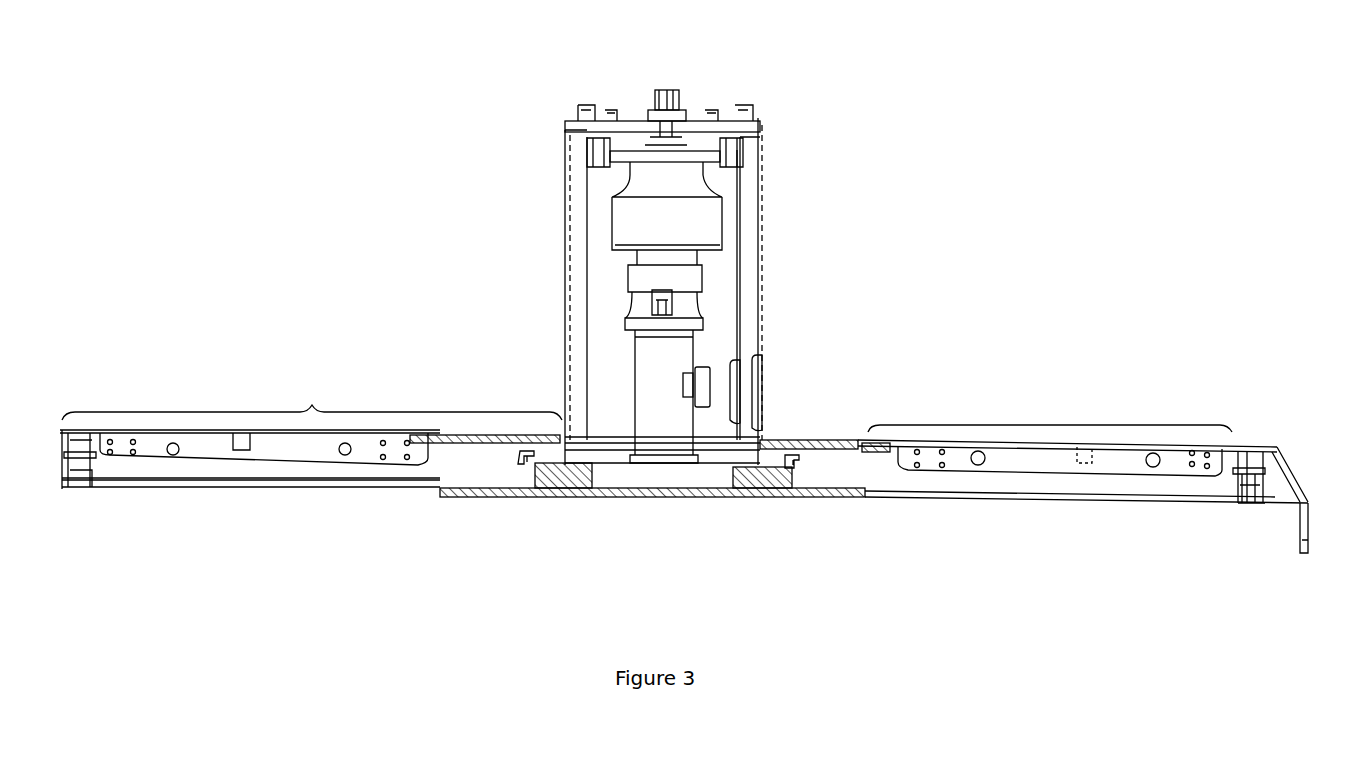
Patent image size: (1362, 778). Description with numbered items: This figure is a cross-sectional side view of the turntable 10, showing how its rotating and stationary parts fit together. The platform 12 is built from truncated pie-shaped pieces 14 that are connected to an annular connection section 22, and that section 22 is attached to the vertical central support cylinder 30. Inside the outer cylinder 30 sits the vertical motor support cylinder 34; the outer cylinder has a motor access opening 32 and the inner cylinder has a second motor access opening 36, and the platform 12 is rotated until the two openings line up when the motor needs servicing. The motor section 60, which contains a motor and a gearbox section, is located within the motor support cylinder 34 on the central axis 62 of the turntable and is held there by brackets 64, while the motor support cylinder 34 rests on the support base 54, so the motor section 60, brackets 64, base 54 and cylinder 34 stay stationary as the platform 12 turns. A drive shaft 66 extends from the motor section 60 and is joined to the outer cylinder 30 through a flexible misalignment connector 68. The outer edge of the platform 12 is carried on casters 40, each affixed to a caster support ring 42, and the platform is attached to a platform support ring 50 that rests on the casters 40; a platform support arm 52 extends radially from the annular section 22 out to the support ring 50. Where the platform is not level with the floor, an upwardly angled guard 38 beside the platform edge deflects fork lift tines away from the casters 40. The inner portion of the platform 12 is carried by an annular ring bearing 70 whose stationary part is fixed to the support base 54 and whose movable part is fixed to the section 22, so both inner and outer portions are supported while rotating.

The turntable 10 is at (326, 192).
The platform 12 is at (311, 430).
The truncated pie-shaped pieces 14 is at (1040, 440).
The annular connection section 22 is at (840, 440).
The vertical central support cylinder 30 is at (762, 292).
The motor access opening 32 is at (762, 393).
The vertical motor support cylinder 34 is at (742, 262).
The second motor access opening 36 is at (740, 358).
The guard 38 is at (1290, 468).
The casters 40 is at (1250, 478).
The caster support ring 42 is at (1245, 500).
The platform support ring 50 is at (1225, 450).
The platform support arm 52 is at (1050, 462).
The support base 54 is at (820, 498).
The motor section 60 is at (655, 233).
The central axis 62 is at (665, 380).
The brackets 64 is at (758, 121).
The drive shaft 66 is at (670, 90).
The flexible misalignment connector 68 is at (626, 113).
The annular ring bearing 70 is at (518, 462).